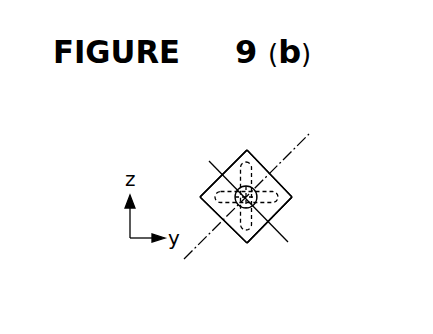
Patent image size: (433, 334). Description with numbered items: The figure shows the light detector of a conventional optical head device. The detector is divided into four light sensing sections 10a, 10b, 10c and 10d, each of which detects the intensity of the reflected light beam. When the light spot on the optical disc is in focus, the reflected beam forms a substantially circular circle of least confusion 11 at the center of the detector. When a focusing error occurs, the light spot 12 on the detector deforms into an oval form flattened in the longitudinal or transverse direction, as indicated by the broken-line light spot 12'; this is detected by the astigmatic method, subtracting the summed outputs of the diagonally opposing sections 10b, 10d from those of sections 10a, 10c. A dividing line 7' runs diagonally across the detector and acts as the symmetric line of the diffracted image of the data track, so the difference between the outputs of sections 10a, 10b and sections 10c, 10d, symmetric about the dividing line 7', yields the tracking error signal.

The dividing line 7' is at (266, 183).
The light sensing section 10a is at (258, 180).
The light sensing section 10b is at (213, 209).
The light sensing section 10c is at (252, 231).
The light sensing section 10d is at (284, 197).
The circle of least confusion 11 is at (271, 191).
The light spot 12 is at (290, 222).
The edge of electrode plate 12' is at (213, 163).